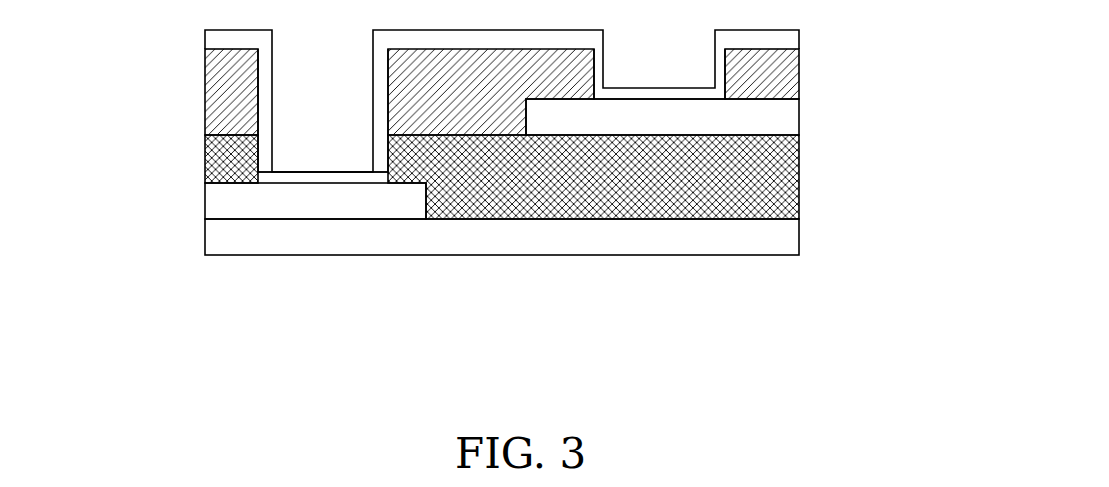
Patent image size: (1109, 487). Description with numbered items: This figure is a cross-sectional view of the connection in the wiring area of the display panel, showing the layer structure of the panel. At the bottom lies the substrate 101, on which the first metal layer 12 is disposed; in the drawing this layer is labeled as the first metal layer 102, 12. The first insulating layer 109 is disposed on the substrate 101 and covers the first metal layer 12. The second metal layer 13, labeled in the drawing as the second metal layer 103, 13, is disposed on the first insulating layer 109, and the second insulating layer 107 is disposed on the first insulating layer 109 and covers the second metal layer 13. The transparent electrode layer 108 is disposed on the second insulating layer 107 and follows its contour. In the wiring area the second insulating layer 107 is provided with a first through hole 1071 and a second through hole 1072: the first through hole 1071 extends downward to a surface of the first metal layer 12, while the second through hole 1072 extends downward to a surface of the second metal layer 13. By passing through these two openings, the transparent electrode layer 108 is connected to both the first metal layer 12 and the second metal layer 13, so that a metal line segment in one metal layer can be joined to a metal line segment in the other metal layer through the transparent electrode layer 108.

The substrate 101 is at (770, 237).
The first electrode (12) 102 is at (235, 201).
The first metal layer 12 is at (221, 202).
The second electrode (13) 103 is at (743, 117).
The second metal layer 13 is at (770, 122).
The second insulating layer 107 is at (782, 78).
The transparent electrode layer 108 is at (780, 42).
The first insulating layer 109 is at (770, 188).
The first through hole 1071 is at (303, 183).
The second through hole 1072 is at (650, 99).